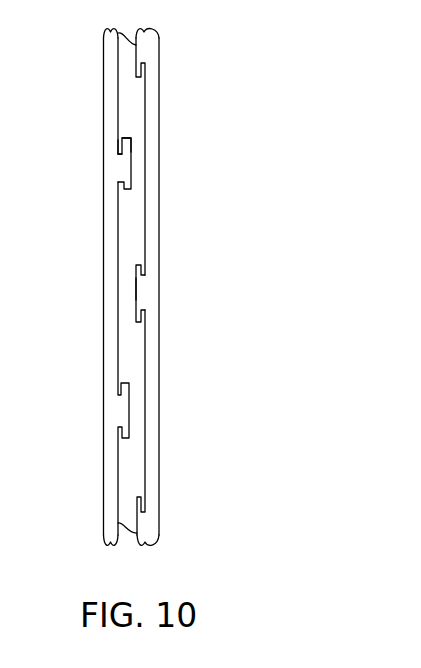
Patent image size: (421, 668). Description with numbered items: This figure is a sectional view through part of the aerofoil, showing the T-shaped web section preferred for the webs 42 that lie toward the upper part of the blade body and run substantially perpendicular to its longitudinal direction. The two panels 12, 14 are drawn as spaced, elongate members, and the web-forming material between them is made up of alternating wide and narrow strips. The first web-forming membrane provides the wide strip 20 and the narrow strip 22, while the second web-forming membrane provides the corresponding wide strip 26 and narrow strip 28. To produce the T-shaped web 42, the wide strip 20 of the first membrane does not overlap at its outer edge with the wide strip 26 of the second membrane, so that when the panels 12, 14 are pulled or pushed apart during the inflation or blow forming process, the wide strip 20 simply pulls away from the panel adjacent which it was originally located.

The panel 12 is at (103, 233).
The panel 14 is at (152, 213).
The wide strip 20 is at (136, 264).
The narrow strip 22 is at (118, 173).
The wide strip 26 is at (130, 138).
The narrow strip 28 is at (143, 287).
The web 42 is at (120, 162).